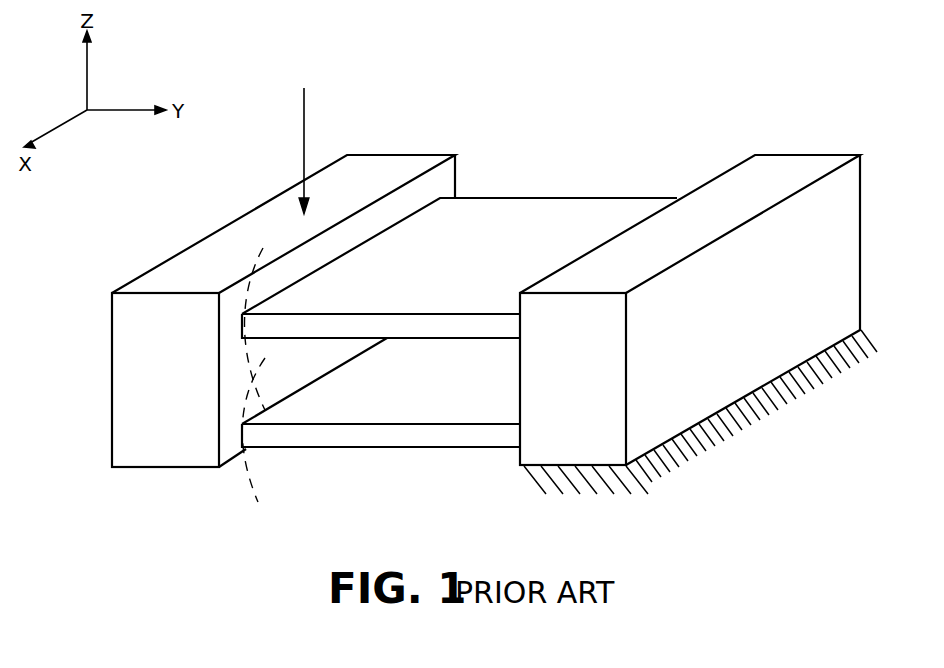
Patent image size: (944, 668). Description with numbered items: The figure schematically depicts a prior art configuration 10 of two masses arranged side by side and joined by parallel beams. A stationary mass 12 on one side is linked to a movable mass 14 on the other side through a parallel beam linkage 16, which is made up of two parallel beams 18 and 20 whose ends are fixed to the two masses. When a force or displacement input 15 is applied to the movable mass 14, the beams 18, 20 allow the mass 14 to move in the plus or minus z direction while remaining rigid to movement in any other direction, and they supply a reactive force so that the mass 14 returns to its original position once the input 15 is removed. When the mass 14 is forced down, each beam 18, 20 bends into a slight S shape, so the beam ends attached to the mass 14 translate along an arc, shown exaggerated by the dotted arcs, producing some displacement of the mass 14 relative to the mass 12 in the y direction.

The prior art vibrating beam accelerometer 10 is at (665, 106).
The mass 12 is at (787, 165).
The mass 14 is at (388, 172).
The force or displacement input 15 is at (316, 151).
The parallel beam linkage 16 is at (343, 348).
The parallel beam 18 is at (548, 215).
The parallel beam 20 is at (459, 437).